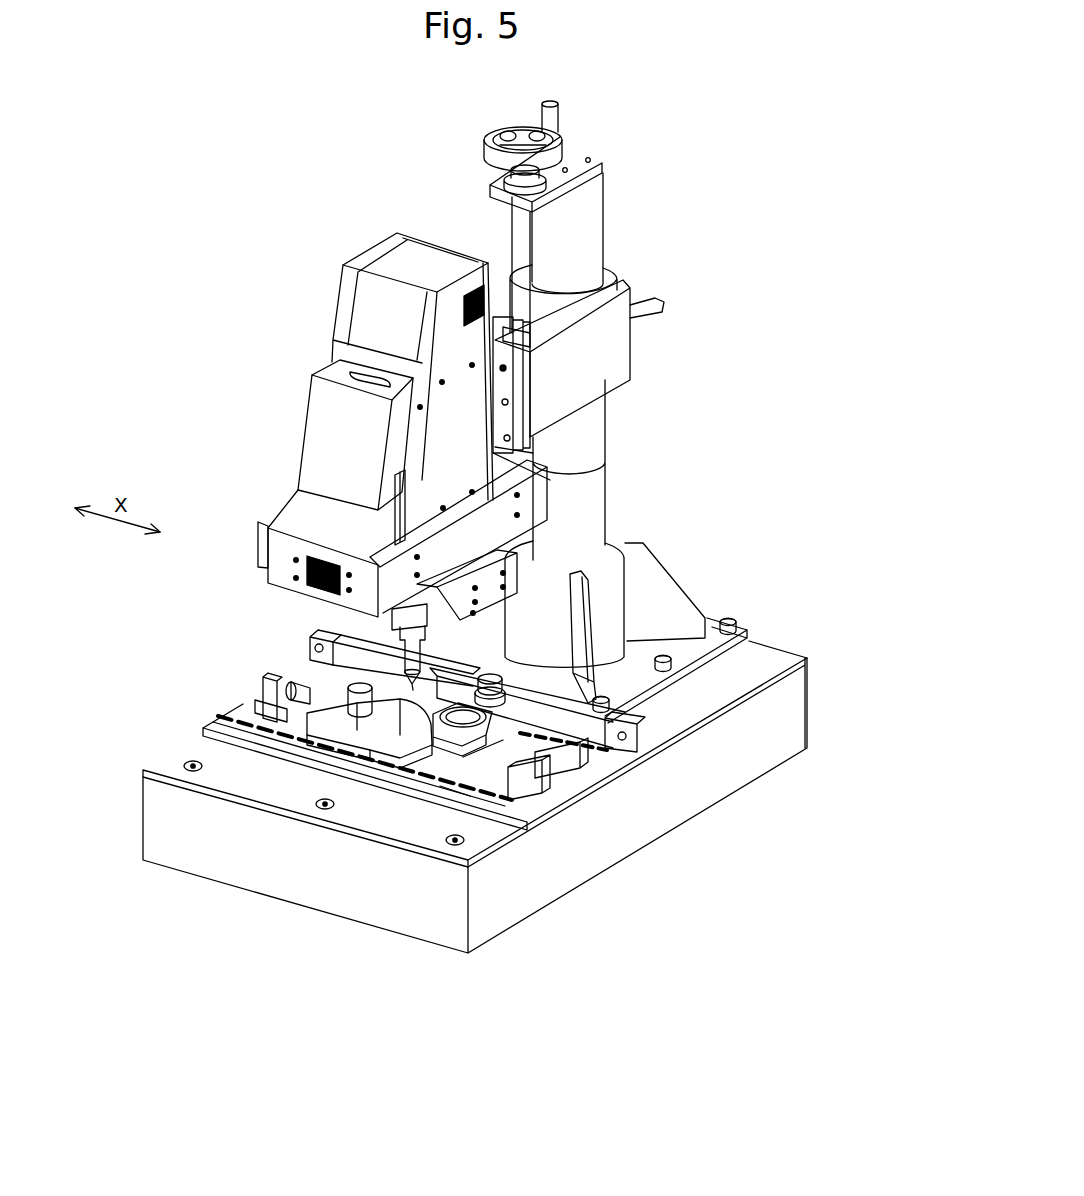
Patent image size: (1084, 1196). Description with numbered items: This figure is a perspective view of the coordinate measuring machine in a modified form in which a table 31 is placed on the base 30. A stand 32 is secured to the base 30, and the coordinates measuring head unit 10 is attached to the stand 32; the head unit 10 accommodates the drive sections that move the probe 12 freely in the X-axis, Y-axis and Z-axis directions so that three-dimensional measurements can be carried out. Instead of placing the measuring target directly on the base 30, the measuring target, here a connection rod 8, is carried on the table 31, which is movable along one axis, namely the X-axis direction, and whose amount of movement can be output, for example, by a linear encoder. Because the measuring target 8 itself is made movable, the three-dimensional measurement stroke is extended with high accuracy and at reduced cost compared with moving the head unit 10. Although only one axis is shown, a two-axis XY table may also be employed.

The connection rod 8 is at (435, 688).
The coordinates measuring head unit 10 is at (323, 313).
The probe 12 is at (410, 676).
The base 30 is at (808, 700).
The table 31 is at (245, 697).
The stand 32 is at (614, 216).